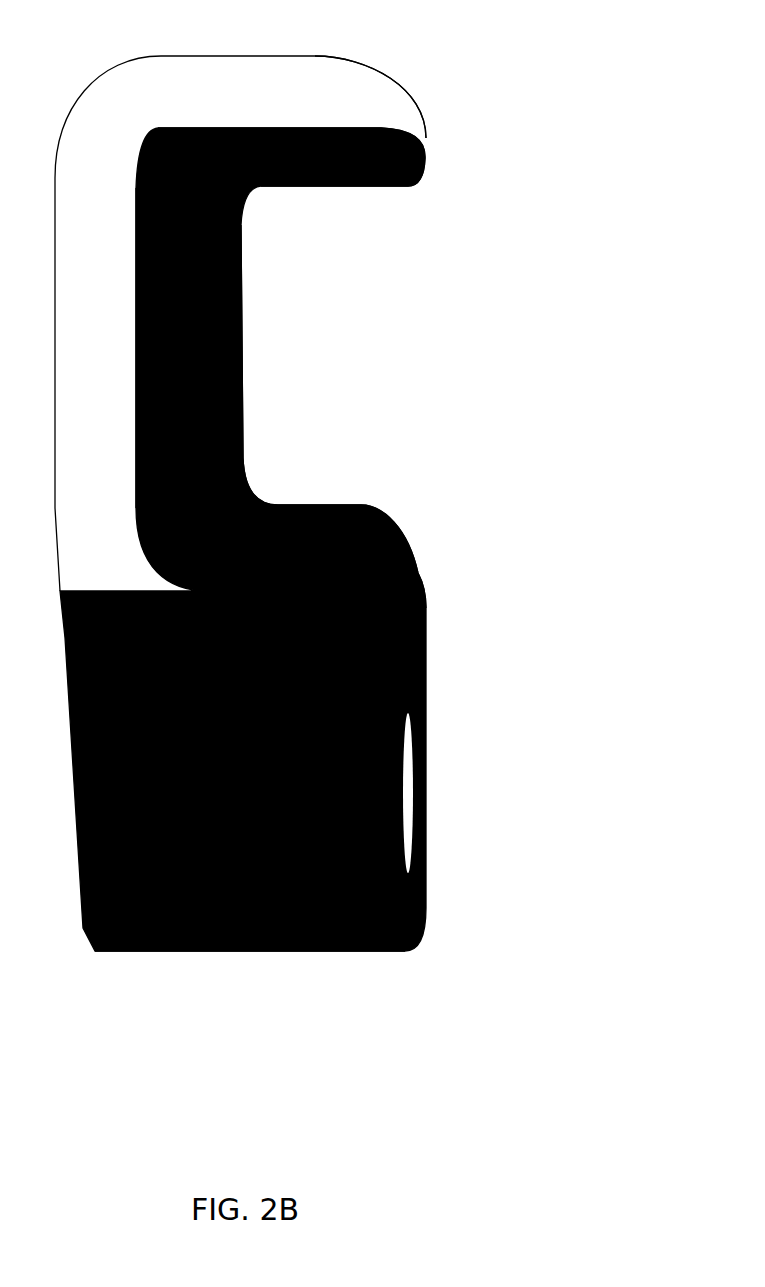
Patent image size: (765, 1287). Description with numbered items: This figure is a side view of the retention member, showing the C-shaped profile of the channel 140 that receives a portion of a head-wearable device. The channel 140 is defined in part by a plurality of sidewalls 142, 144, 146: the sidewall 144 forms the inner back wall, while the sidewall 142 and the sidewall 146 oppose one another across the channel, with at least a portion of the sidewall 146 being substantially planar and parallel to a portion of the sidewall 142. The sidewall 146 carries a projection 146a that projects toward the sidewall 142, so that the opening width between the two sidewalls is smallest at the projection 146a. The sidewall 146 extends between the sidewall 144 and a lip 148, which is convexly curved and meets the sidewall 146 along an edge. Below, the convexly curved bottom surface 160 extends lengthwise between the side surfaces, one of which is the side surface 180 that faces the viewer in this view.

The channel 140 is at (318, 355).
The sidewall 142 is at (292, 533).
The sidewall 144 is at (190, 445).
The sidewall 146 is at (267, 177).
The projection 146a is at (400, 178).
The lip 148 is at (382, 120).
The bottom surface 160 is at (300, 947).
The side surface 180 is at (198, 947).